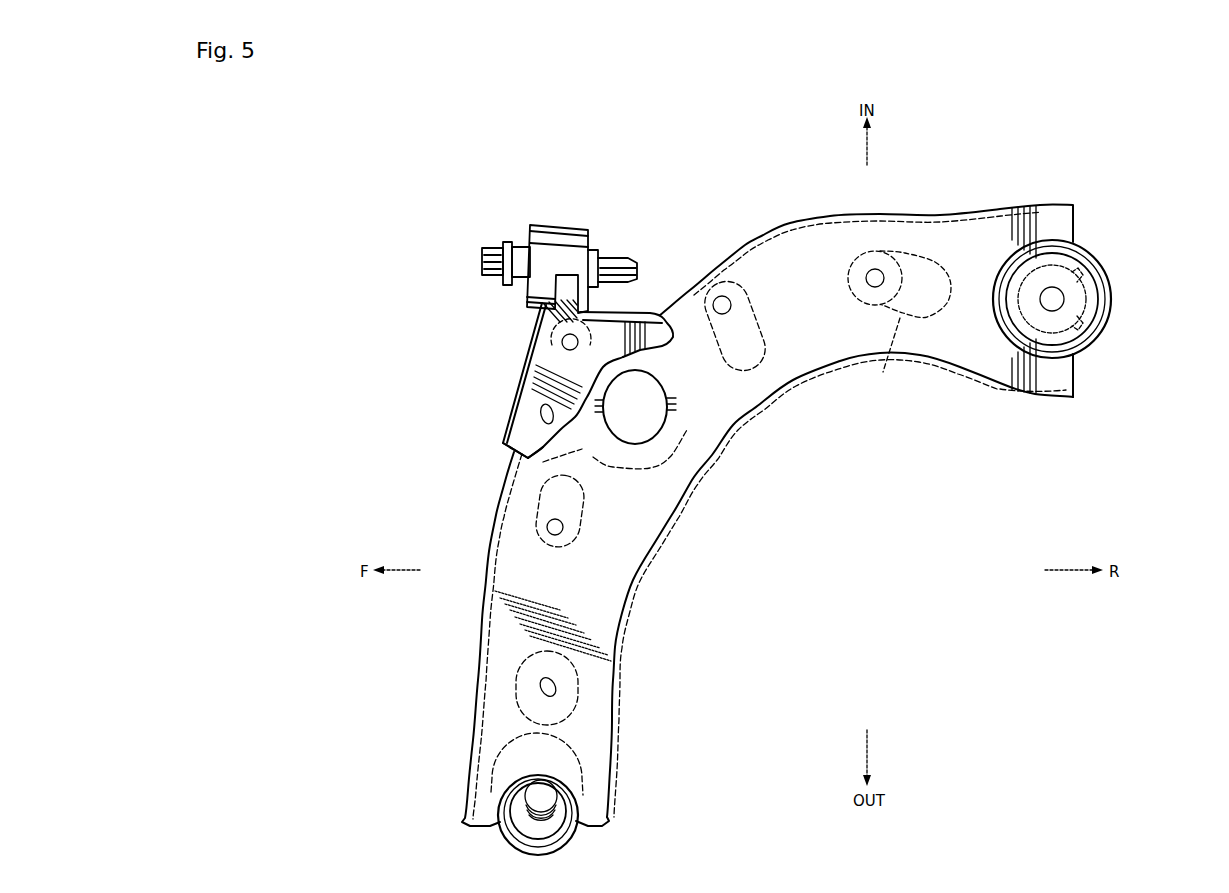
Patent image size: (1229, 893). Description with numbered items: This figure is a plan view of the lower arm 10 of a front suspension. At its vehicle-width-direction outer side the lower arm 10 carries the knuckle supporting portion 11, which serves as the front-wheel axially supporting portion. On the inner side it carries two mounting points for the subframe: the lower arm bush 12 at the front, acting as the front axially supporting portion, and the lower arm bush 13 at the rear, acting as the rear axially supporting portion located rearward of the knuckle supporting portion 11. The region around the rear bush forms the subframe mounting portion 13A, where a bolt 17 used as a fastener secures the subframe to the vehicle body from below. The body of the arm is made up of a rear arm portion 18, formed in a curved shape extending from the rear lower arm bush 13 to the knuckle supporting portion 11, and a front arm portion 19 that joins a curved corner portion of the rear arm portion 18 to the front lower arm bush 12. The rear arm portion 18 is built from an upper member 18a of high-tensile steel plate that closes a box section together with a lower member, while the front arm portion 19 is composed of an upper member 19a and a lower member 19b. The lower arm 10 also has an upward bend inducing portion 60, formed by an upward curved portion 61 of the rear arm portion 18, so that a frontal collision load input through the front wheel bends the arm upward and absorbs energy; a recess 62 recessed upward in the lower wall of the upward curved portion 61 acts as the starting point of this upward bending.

The lower arm 10 is at (742, 231).
The knuckle supporting portion 11 is at (565, 784).
The lower arm bush 12 is at (550, 225).
The lower arm bush 13 is at (1098, 299).
The subframe mounting portion 13A is at (1113, 295).
The bolt 17 is at (1056, 302).
The rear arm portion 18 is at (742, 427).
The upper member 18a is at (697, 445).
The front arm portion 19 is at (533, 364).
The upper member 19a is at (527, 424).
The lower member 19b is at (633, 311).
The upward bend inducing portion 60 is at (899, 241).
The upward curved portion 61 is at (878, 253).
The recess 62 is at (912, 325).